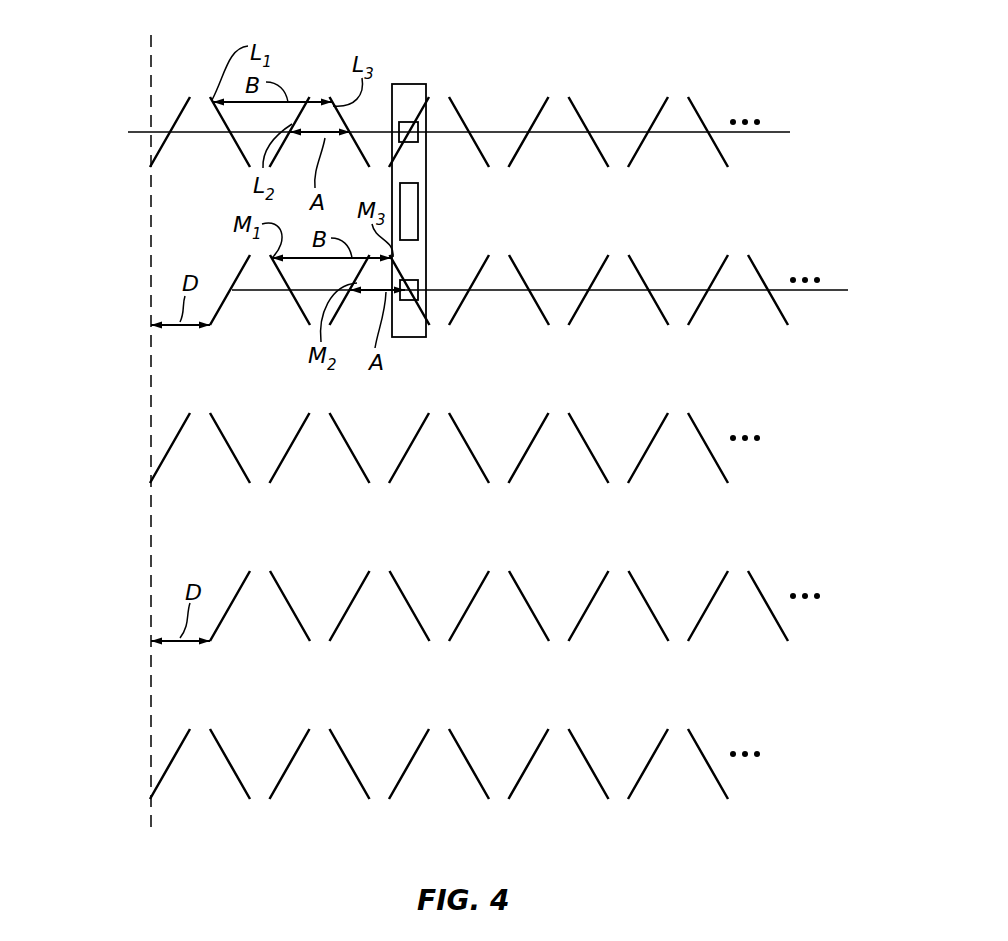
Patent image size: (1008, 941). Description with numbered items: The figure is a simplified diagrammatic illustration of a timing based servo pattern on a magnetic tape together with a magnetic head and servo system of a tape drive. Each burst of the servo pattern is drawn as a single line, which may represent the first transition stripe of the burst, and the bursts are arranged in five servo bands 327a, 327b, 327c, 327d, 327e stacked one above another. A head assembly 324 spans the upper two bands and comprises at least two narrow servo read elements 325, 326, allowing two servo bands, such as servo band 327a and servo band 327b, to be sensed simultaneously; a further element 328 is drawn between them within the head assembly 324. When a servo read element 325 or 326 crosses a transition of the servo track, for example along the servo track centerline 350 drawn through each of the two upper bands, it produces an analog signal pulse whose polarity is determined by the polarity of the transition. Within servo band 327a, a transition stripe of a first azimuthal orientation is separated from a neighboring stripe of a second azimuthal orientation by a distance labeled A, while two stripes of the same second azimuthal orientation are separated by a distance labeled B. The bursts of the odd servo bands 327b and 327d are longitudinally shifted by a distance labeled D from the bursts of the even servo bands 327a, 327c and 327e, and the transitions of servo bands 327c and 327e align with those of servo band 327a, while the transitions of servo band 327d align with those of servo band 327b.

The head assembly 324 is at (408, 84).
The servo read element 325 is at (420, 136).
The servo read element 326 is at (418, 292).
The servo band 327a is at (102, 97).
The servo band 327b is at (102, 255).
The servo band 327c is at (102, 413).
The servo band 327d is at (102, 571).
The servo band 327e is at (102, 729).
The intermediate sampling region 328 is at (418, 212).
The servo track centerline 350 is at (779, 132).